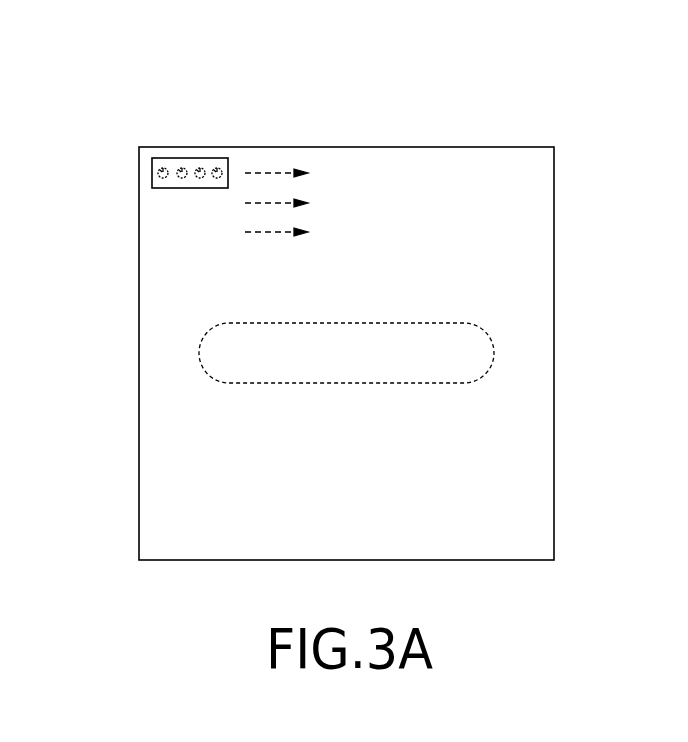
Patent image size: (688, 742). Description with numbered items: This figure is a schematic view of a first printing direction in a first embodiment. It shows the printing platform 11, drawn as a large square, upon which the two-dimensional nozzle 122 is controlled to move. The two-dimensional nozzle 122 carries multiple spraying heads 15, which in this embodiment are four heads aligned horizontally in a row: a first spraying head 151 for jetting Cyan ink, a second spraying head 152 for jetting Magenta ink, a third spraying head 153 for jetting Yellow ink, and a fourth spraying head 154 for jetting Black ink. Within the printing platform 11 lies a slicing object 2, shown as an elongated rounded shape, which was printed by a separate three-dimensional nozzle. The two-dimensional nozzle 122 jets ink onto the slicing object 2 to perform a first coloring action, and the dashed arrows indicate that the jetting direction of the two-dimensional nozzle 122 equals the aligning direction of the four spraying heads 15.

The printing platform 11 is at (147, 425).
The slicing object 2 is at (482, 354).
The 2D nozzle 122 is at (155, 172).
The spraying heads 15 is at (184, 102).
The first spraying head 151 is at (217, 167).
The second spraying head 152 is at (200, 167).
The third spraying head 153 is at (182, 167).
The fourth spraying head 154 is at (163, 167).